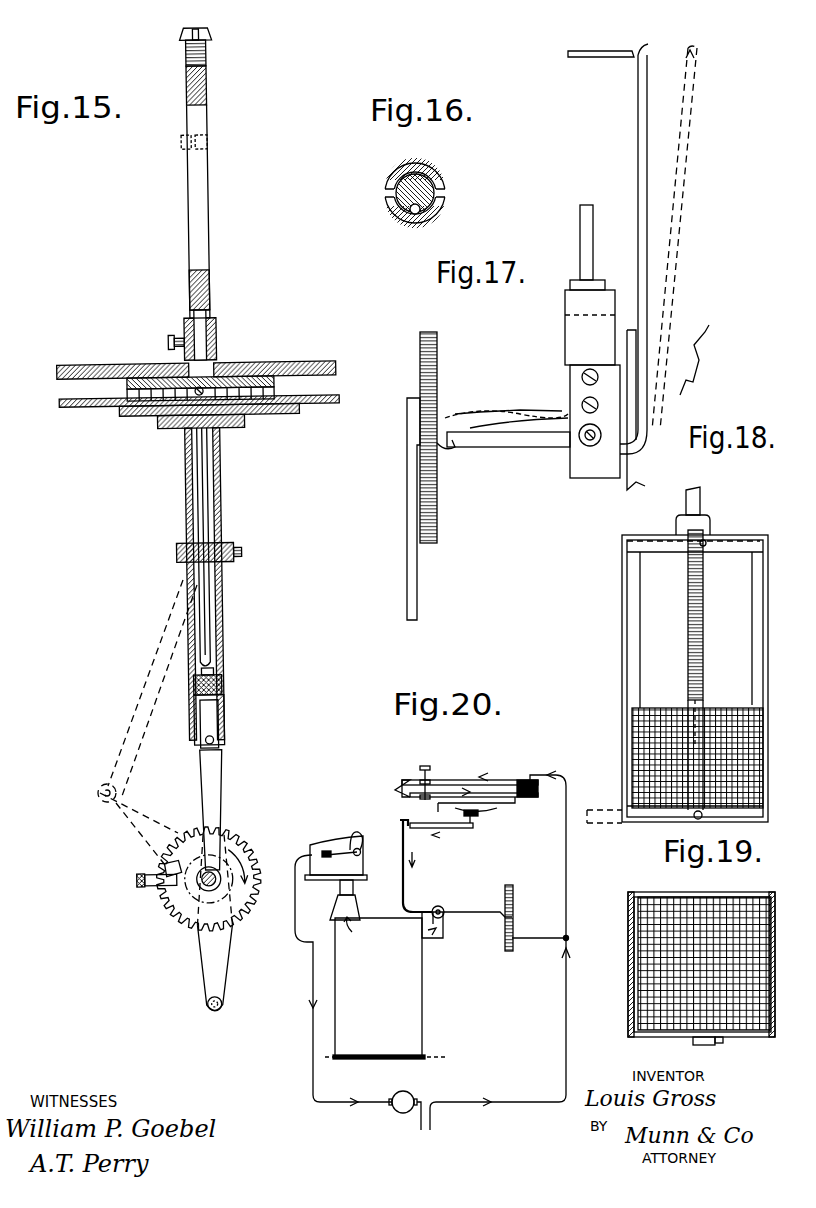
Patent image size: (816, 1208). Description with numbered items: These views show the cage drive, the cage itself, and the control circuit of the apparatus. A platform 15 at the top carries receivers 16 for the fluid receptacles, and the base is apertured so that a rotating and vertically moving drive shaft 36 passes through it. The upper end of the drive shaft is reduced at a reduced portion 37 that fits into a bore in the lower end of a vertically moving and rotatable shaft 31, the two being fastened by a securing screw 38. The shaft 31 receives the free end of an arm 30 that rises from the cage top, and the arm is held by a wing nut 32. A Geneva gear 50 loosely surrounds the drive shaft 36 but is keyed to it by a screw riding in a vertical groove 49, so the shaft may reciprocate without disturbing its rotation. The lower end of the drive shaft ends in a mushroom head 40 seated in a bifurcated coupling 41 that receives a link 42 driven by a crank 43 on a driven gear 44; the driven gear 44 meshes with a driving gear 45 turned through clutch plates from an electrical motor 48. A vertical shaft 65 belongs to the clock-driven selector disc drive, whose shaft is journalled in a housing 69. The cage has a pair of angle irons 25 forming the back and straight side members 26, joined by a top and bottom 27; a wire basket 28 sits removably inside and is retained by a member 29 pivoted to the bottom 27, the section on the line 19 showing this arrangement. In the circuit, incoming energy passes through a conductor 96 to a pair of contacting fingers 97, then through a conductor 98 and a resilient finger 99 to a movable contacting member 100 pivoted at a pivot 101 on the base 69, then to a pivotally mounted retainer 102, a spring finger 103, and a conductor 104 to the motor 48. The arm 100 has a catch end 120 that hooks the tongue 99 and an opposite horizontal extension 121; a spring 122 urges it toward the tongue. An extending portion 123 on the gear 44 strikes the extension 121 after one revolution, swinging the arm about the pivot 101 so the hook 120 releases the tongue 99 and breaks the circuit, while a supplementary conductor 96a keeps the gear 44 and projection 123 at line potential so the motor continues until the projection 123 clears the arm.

In FIG. 15, the platform 15 is at (293, 363).
In FIG. 15, the receivers 16 is at (295, 630).
In FIG. 18, the section line 19- 19 is at (592, 665).
In FIG. 18, the angle irons 25 is at (641, 594).
In FIG. 19, the angle irons 25 is at (645, 886).
In FIG. 18, the straight side members 26 is at (622, 612).
In FIG. 19, the straight side members 26 is at (628, 1026).
In FIG. 18, the top and bottom 27 is at (736, 540).
In FIG. 18, the fabric or wire basket 28 is at (660, 716).
In FIG. 19, the fabric or wire basket 28 is at (638, 968).
In FIG. 18, the member 29 is at (704, 664).
In FIG. 19, the member 29 is at (696, 1043).
In FIG. 15, the arm 30 is at (205, 76).
In FIG. 18, the arm 30 is at (701, 506).
In FIG. 15, the shaft 31 is at (200, 246).
In FIG. 15, the wing nut 32 is at (207, 34).
In FIG. 15, the drive shaft 36 is at (215, 486).
In FIG. 16, the drive shaft 36 is at (422, 180).
In FIG. 15, the reduced portion 37 is at (203, 327).
In FIG. 15, the securing screw 38 is at (170, 342).
In FIG. 15, the mushroom head 40 is at (217, 685).
In FIG. 15, the coupling 41 is at (213, 716).
In FIG. 15, the link 42 is at (212, 794).
In FIG. 16, the link 42 is at (440, 190).
In FIG. 15, the crank 43 is at (227, 951).
In FIG. 17, the crank 43 is at (407, 590).
In FIG. 15, the driven gear 44 is at (246, 848).
In FIG. 17, the driven gear 44 is at (437, 352).
In FIG. 20, the driven gear 44 is at (513, 898).
In FIG. 18, the driving gear 45 is at (751, 575).
In FIG. 19, the driving gear 45 is at (768, 893).
In FIG. 20, the electrical motor 48 is at (410, 1093).
In FIG. 15, the vertical groove 49 is at (205, 506).
In FIG. 16, the vertical groove 49 is at (413, 215).
In FIG. 15, the Geneva gear 50 is at (200, 388).
In FIG. 17, the vertical shaft 65 is at (580, 240).
In FIG. 20, the housing 69 is at (410, 986).
In FIG. 20, the conductor 96 is at (569, 936).
In FIG. 20, the conductor 96a is at (536, 938).
In FIG. 20, the contacting fingers 97 is at (405, 795).
In FIG. 20, the conductor 98 is at (492, 820).
In FIG. 17, the resilient finger 99 is at (606, 51).
In FIG. 20, the resilient finger 99 is at (441, 823).
In FIG. 17, the movable contacting member 100 is at (638, 120).
In FIG. 20, the movable contacting member 100 is at (411, 881).
In FIG. 17, the pivot 101 is at (590, 446).
In FIG. 20, the pivot 101 is at (443, 908).
In FIG. 20, the retainer 102 is at (361, 848).
In FIG. 20, the spring finger 103 is at (331, 841).
In FIG. 20, the conductor 104 is at (312, 1025).
In FIG. 17, the catch end 120 is at (647, 45).
In FIG. 15, the horizontal extension 121 is at (137, 886).
In FIG. 17, the horizontal extension 121 is at (500, 447).
In FIG. 17, the spring 122 is at (536, 419).
In FIG. 15, the extending portion 123 is at (158, 866).
In FIG. 17, the extending portion 123 is at (450, 456).
In FIG. 20, the extending portion 123 is at (472, 924).